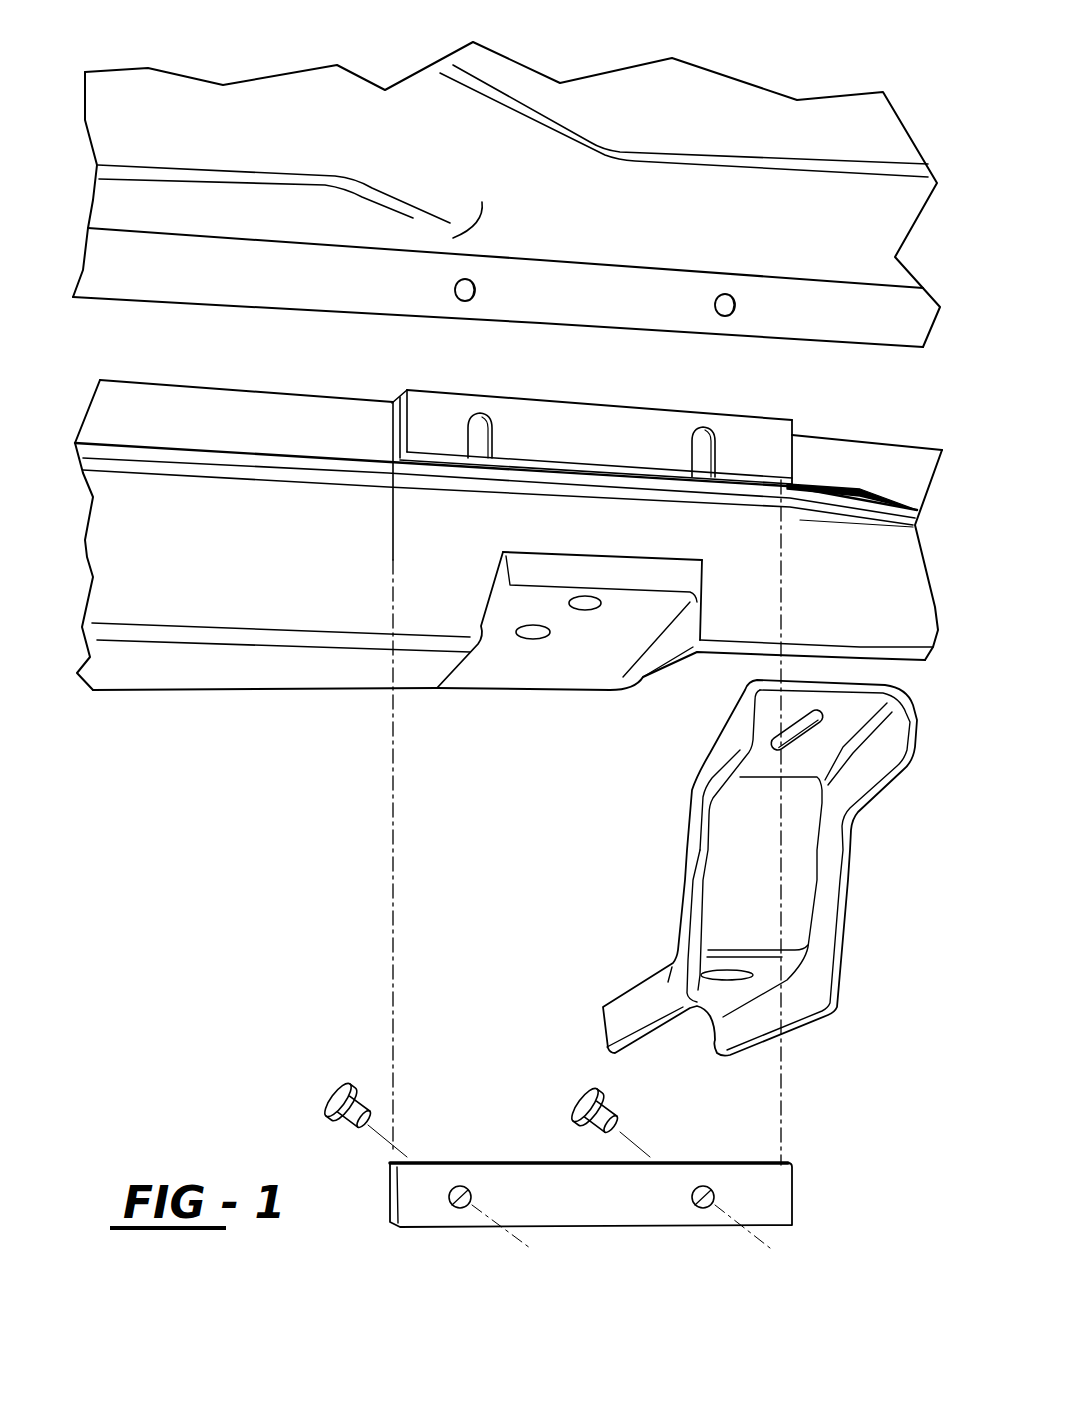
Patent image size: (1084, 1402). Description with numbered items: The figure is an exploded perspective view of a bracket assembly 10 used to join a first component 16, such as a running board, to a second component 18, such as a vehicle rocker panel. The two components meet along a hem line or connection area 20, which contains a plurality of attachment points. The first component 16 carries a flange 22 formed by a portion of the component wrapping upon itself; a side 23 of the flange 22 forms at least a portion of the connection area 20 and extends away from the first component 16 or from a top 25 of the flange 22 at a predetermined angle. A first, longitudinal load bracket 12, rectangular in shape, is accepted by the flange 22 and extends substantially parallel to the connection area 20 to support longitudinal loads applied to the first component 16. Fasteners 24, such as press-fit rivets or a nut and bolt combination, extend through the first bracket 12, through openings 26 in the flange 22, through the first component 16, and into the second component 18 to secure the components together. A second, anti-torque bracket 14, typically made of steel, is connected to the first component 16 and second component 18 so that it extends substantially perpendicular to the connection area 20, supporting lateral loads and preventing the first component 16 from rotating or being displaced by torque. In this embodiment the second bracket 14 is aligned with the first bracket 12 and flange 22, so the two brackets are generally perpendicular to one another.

The bracket assembly 10 is at (106, 726).
The first bracket 12 is at (390, 1193).
The second bracket 14 is at (853, 870).
The first component 16 is at (80, 551).
The second component 18 is at (895, 140).
The connection area 20 is at (767, 433).
The flange 22 is at (390, 416).
The side 23 is at (550, 418).
The fastener 24 is at (333, 1085).
The top 25 is at (402, 393).
The opening 26 is at (462, 437).